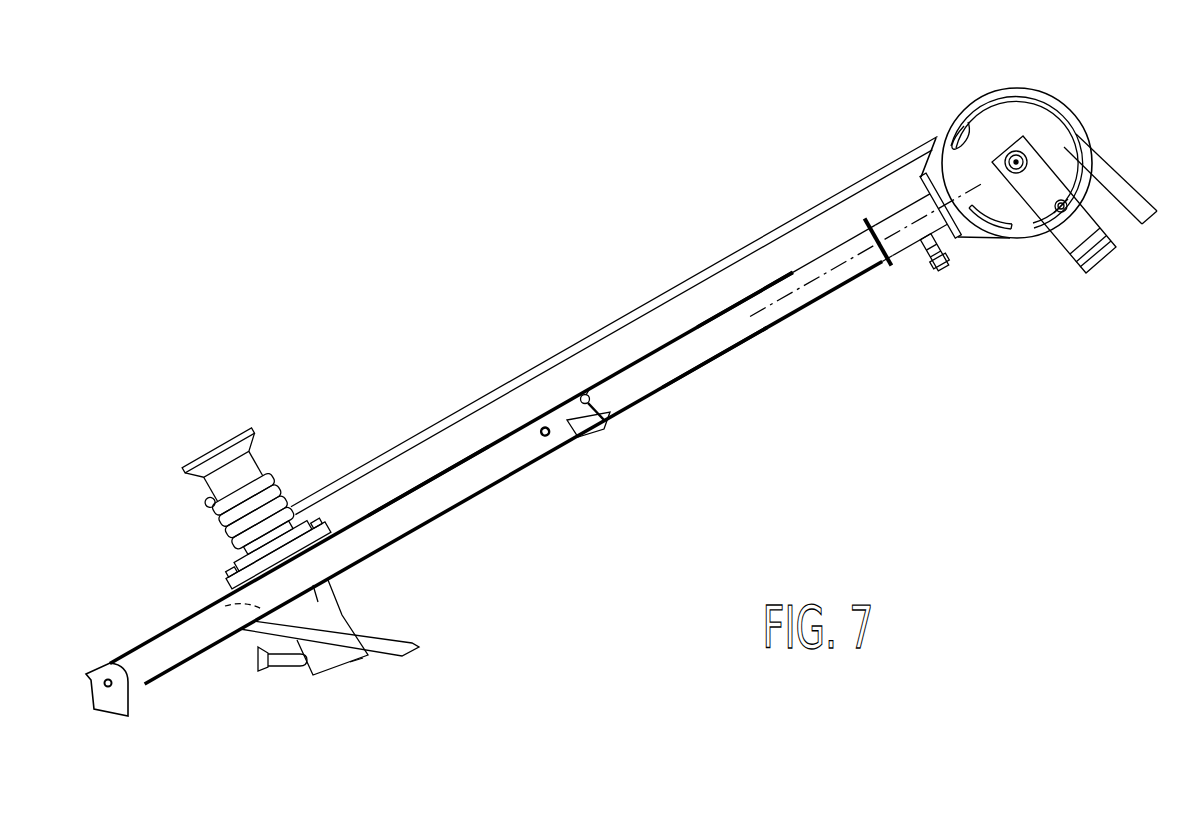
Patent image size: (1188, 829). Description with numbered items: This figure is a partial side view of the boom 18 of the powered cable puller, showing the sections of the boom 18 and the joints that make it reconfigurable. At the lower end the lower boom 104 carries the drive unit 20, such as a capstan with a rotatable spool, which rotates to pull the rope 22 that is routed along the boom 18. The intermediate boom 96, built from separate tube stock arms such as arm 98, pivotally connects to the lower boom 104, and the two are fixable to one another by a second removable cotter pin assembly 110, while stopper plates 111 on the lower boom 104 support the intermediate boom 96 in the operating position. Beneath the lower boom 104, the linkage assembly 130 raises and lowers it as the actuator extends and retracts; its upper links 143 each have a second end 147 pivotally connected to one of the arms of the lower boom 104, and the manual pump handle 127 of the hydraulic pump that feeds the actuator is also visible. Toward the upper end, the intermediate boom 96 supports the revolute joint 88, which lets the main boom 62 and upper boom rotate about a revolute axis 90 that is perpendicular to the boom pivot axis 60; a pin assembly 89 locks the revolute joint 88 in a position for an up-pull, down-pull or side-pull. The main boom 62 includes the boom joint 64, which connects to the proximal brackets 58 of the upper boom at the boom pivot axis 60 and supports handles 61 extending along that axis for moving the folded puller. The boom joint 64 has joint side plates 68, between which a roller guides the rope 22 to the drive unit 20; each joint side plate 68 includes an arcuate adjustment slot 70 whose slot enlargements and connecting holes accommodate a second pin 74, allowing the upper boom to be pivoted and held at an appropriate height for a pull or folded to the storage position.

The boom 18 is at (659, 340).
The drive unit 20 is at (260, 455).
The rope 22 is at (492, 390).
The proximal brackets 58 is at (1037, 150).
The boom pivot axis 60 is at (1014, 152).
The handles 61 is at (968, 122).
The main boom 62 is at (795, 277).
The boom joint 64 is at (1007, 212).
The joint side plates 68 is at (950, 167).
The arcuate adjustment slot 70 is at (1083, 153).
The second pin 74 is at (1066, 203).
The revolute joint 88 is at (910, 240).
The pin assembly 89 is at (947, 257).
The revolute axis 90 is at (833, 267).
The intermediate boom 96 is at (725, 332).
The tube stock arm 98 is at (695, 360).
The lower boom 104 is at (403, 490).
The second removable cotter pin assembly 110 is at (612, 410).
The stopper plates 111 is at (590, 440).
The manual pump handle 127 is at (287, 673).
The linkage assembly 130 is at (363, 640).
The upper links 143 is at (340, 605).
The second end 147 is at (208, 600).